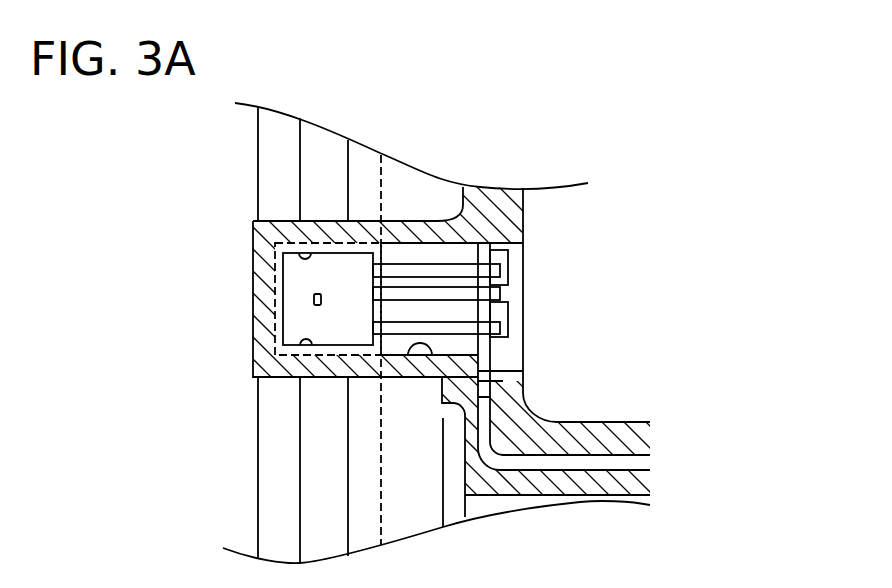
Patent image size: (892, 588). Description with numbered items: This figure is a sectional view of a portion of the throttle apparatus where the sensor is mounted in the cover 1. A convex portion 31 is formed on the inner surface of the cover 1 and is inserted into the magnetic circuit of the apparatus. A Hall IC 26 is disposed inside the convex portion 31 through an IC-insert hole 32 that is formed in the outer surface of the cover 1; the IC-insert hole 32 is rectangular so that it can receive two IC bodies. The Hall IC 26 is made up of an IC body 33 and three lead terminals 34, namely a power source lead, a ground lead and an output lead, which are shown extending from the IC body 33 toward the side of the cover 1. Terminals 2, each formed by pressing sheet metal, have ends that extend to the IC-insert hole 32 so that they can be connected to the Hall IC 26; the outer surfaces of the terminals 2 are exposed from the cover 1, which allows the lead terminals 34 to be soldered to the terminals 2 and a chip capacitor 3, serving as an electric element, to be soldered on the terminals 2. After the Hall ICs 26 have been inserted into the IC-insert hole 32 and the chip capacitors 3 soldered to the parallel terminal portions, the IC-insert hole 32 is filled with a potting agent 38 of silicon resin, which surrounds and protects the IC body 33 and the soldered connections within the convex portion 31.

The cover 1 is at (517, 202).
The terminals 2 is at (598, 463).
The chip capacitor 3 is at (508, 260).
The Hall IC 26 is at (137, 225).
The convex portion 31 is at (287, 378).
The IC-insert hole 32 is at (418, 346).
The IC body 33 is at (297, 307).
The lead terminals 34 is at (422, 287).
The potting agent 38 is at (515, 292).